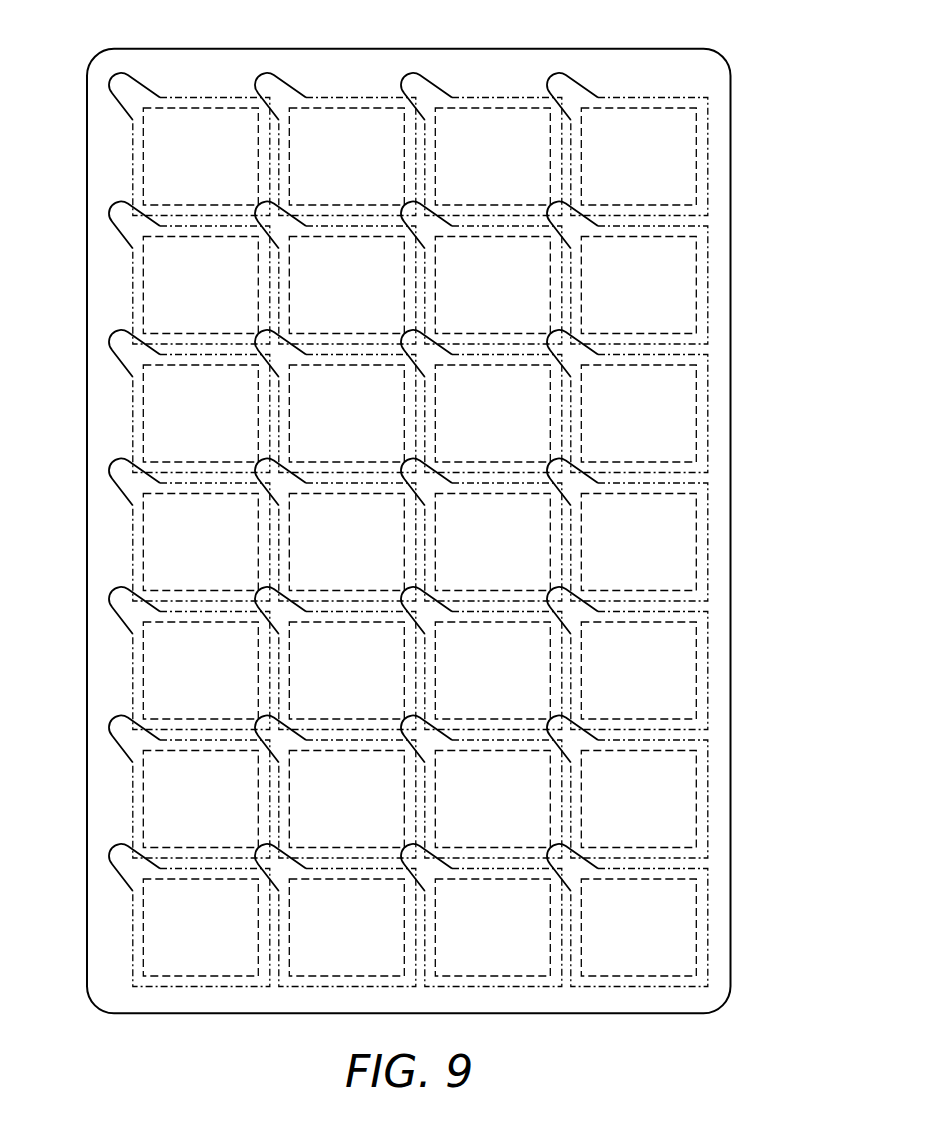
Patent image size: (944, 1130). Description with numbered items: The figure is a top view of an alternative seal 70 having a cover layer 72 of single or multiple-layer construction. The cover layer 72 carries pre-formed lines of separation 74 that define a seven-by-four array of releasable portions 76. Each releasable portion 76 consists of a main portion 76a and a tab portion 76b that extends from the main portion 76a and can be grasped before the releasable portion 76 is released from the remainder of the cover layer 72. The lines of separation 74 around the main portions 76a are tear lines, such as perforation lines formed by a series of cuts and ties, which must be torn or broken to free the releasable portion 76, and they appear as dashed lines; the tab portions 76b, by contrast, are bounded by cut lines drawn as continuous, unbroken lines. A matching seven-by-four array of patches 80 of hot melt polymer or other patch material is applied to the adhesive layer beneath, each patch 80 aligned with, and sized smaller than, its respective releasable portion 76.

The seal 70 is at (98, 1030).
The cover layer 72 is at (720, 548).
The lines of separation 74 is at (493, 97).
The releasable portion 76 is at (348, 100).
The main portion 76a is at (198, 102).
The tab portion 76b is at (123, 83).
The patch 80 is at (167, 160).